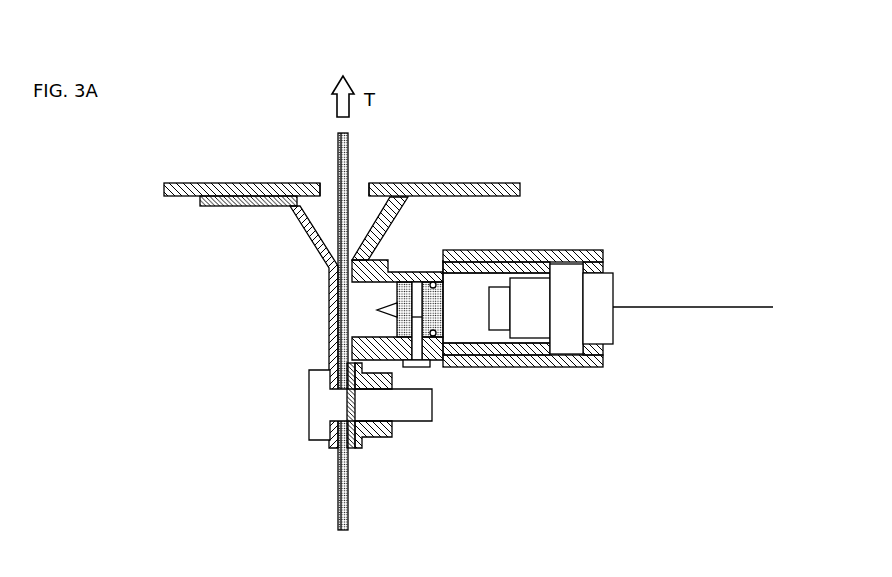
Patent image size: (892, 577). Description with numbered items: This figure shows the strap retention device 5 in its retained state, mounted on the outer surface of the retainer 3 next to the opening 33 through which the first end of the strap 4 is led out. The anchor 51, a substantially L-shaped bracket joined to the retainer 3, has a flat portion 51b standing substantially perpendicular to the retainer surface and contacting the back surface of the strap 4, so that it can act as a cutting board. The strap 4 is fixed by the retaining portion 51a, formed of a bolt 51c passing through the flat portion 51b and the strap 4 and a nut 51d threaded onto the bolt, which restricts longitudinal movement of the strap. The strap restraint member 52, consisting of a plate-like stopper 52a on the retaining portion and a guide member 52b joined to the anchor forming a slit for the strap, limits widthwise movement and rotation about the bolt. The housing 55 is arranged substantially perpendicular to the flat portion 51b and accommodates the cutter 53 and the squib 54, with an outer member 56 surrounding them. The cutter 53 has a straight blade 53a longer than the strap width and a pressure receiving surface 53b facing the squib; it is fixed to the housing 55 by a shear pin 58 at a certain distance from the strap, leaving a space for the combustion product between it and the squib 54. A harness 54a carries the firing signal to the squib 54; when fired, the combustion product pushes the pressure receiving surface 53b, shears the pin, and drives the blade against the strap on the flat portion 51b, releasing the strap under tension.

The retainer 3 is at (466, 183).
The opening 33 is at (366, 188).
The strap 4 is at (336, 152).
The strap retention device 5 is at (526, 351).
The anchor 51 is at (326, 334).
The retaining portion 51a is at (312, 457).
The flat portion 51b is at (329, 345).
The bolt 51c is at (309, 406).
The nut 51d is at (393, 437).
The strap restraint member 52 is at (427, 344).
The stopper 52a is at (349, 448).
The guide member 52b is at (400, 203).
The cutter 53 is at (384, 290).
The straight blade 53a is at (376, 310).
The pressure receiving surface 53b is at (444, 304).
The squib 54 is at (578, 321).
The harness 54a is at (721, 309).
The housing 55 is at (520, 367).
The outer housing 56 is at (548, 250).
The shear pin 58 is at (428, 368).